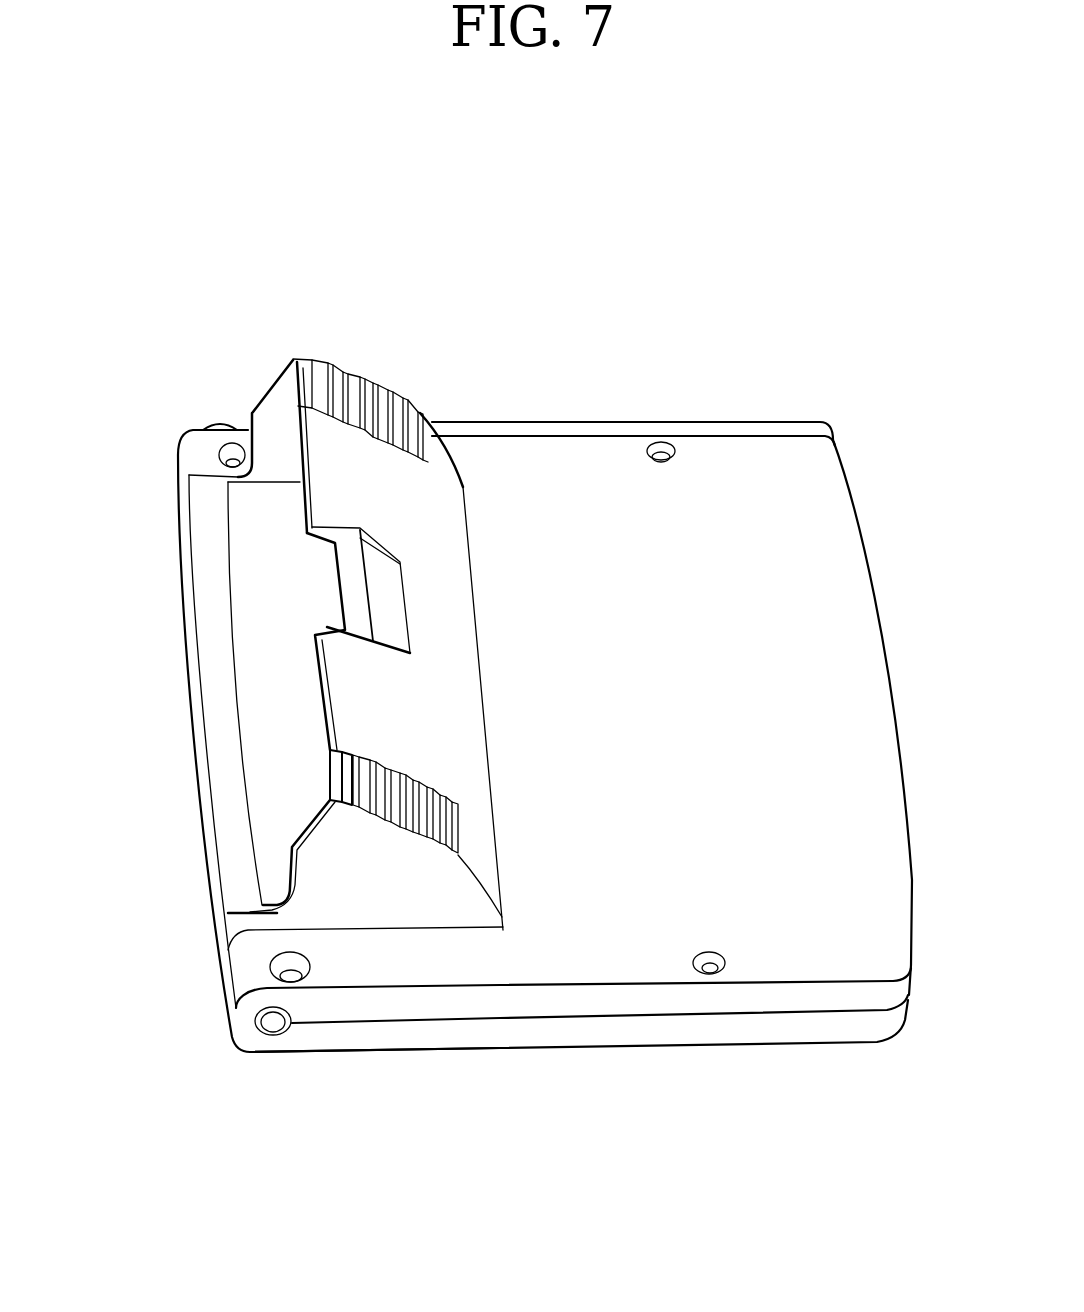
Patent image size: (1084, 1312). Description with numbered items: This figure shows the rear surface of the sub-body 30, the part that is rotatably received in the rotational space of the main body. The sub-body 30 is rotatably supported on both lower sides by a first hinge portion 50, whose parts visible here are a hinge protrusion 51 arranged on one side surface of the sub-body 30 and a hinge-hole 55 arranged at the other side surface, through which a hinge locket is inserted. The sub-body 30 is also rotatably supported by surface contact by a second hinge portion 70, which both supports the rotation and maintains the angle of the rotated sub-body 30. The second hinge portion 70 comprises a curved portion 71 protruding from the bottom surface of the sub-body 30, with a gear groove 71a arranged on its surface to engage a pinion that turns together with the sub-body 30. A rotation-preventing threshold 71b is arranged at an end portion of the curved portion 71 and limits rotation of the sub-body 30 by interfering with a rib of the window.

The second hinge portion 70 is at (843, 320).
The sub-body 30 is at (617, 467).
The hinge protrusion 51 is at (222, 427).
The curved portion 71 is at (452, 493).
The gear groove 71a is at (390, 395).
The rotation-preventing threshold 71b is at (355, 585).
The hinge-hole 55 is at (275, 1017).
The first hinge portion 50 is at (242, 1060).